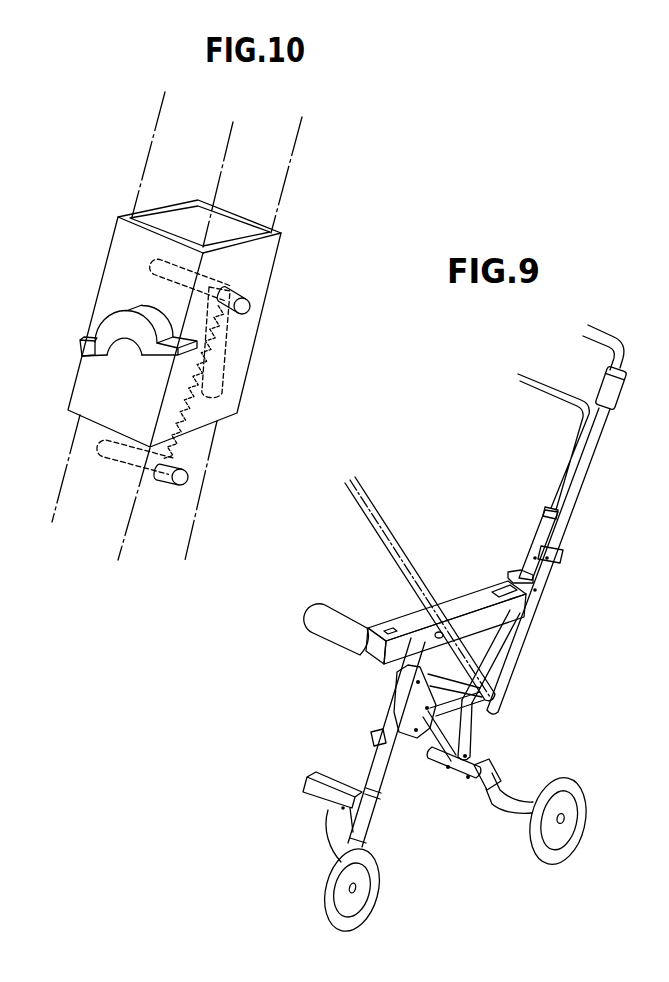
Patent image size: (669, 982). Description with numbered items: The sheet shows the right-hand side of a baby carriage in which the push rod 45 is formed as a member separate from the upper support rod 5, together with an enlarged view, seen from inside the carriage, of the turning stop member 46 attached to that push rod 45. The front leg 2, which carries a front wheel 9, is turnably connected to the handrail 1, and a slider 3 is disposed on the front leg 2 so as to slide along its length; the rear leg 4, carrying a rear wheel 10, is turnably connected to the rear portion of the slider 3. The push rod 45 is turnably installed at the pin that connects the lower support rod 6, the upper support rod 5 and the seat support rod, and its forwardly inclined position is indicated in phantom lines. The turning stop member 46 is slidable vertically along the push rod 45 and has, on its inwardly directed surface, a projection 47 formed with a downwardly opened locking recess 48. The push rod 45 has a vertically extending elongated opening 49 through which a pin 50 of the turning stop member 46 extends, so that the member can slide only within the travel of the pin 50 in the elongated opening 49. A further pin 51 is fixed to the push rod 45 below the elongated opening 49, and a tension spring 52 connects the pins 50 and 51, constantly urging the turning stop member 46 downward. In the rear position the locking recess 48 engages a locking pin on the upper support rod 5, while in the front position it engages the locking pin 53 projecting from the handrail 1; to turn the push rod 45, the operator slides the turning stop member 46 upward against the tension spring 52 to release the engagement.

In FIG. 9, the handrail 1 is at (473, 603).
In FIG. 9, the front leg 2 is at (380, 762).
In FIG. 9, the slider 3 is at (400, 703).
In FIG. 9, the rear leg 4 is at (510, 795).
In FIG. 9, the upper support rod 5 is at (497, 642).
In FIG. 9, the lower support rod 6 is at (476, 742).
In FIG. 9, the front wheel 9 is at (343, 863).
In FIG. 9, the rear wheel 10 is at (562, 780).
In FIG. 10, the push rod 45 is at (280, 152).
In FIG. 9, the push rod 45 is at (563, 532).
In FIG. 10, the turning stop member 46 is at (292, 225).
In FIG. 9, the turning stop member 46 is at (556, 568).
In FIG. 10, the projection 47 is at (122, 322).
In FIG. 10, the locking recess 48 is at (130, 345).
In FIG. 10, the elongated opening 49 is at (230, 350).
In FIG. 10, the pin 50 is at (250, 306).
In FIG. 10, the pin 51 is at (188, 478).
In FIG. 10, the tension spring 52 is at (183, 447).
In FIG. 9, the locking pin 53 is at (434, 633).